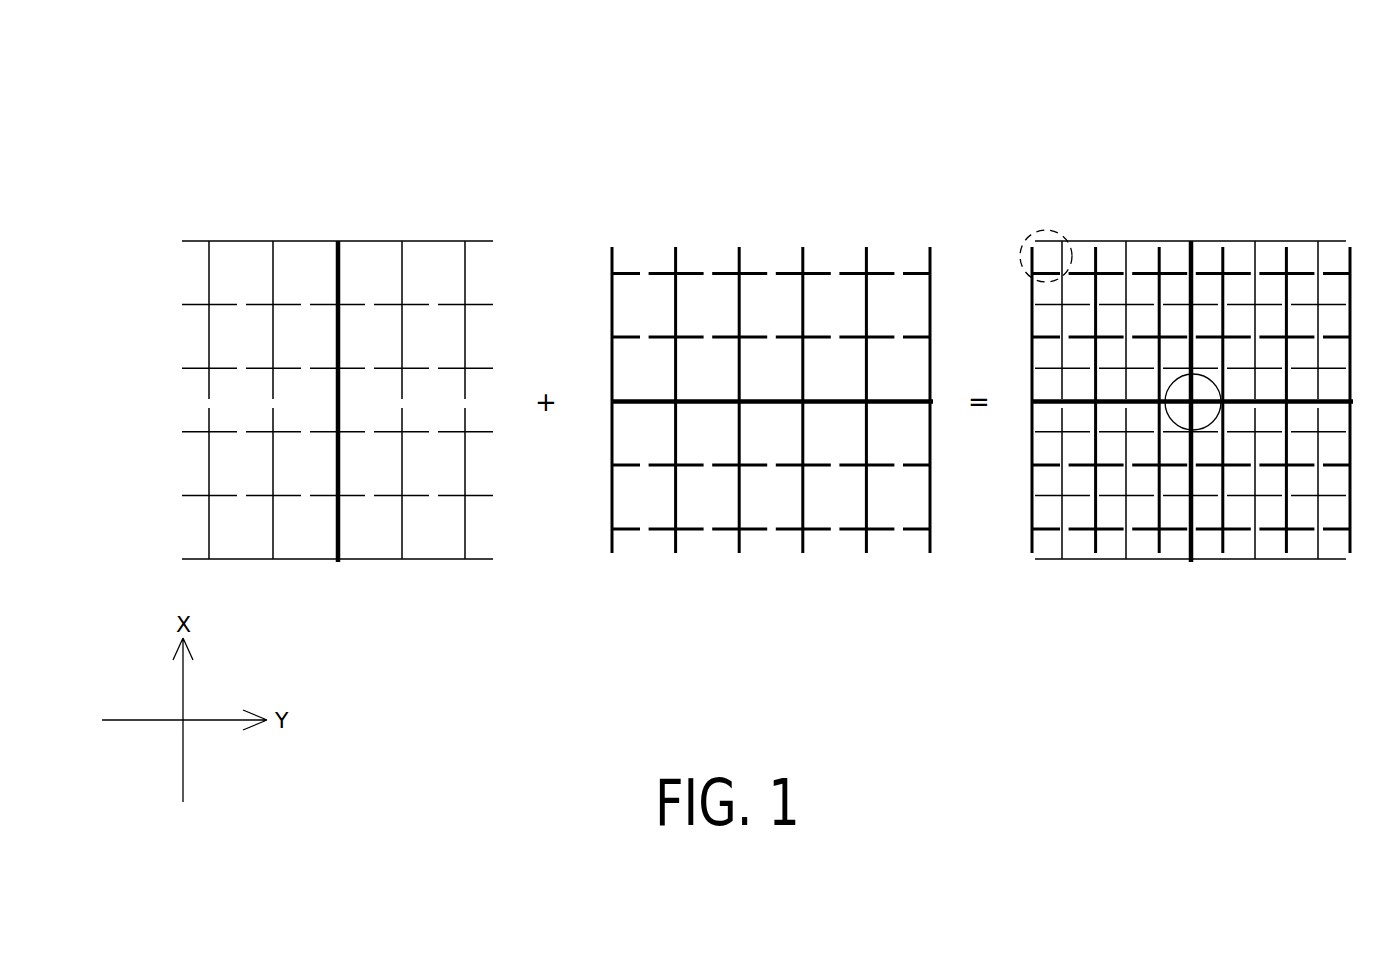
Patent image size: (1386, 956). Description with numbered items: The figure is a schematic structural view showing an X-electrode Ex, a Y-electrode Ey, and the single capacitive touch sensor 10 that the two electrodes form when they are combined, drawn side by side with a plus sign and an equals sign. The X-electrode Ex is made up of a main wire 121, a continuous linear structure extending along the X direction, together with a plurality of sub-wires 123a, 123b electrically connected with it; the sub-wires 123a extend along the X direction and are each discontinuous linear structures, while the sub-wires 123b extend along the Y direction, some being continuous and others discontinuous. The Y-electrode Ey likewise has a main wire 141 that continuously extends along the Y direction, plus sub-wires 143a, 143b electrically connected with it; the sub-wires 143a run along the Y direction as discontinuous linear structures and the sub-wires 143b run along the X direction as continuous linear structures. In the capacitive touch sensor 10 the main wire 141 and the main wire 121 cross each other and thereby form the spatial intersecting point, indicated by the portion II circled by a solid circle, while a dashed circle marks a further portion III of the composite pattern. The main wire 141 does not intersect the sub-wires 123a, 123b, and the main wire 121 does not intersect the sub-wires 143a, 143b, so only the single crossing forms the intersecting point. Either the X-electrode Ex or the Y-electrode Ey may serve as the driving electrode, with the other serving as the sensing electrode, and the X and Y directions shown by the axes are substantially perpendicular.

The capacitive touch sensor 10 is at (1194, 138).
The main wire 121 is at (342, 273).
The sub-wires 123a is at (208, 268).
The sub-wires 123b is at (240, 240).
The main wire 141 is at (772, 400).
The sub-wires 143a is at (625, 269).
The sub-wires 143b is at (612, 262).
The X-electrode Ex is at (312, 138).
The Y-electrode Ey is at (808, 138).
The portion circled by a solid circle II is at (1205, 374).
The enlarged region III is at (1063, 235).